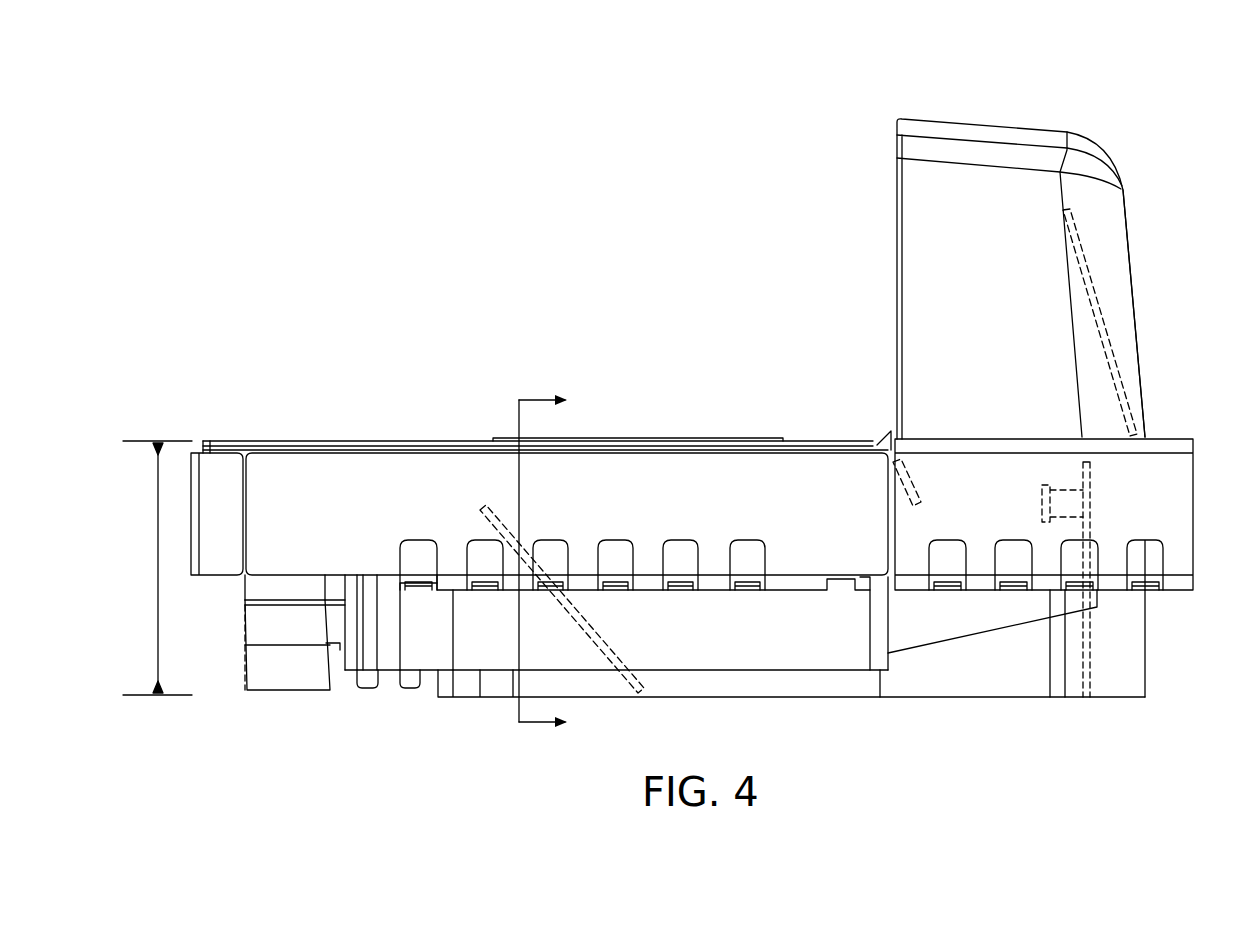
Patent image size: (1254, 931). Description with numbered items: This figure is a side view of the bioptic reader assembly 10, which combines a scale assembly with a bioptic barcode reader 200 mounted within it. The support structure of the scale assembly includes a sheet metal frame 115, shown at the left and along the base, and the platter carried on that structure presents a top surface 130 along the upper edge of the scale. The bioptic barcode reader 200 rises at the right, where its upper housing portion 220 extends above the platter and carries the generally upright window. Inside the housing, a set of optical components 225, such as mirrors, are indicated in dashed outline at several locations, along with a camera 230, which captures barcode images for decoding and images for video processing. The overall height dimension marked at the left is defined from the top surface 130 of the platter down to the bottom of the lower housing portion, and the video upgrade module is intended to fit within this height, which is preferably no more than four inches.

The bioptic reader assembly 10 is at (758, 118).
The sheet metal frame 115 is at (222, 480).
The top surface 130 is at (343, 432).
The bioptic barcode reader 200 is at (972, 100).
The upper housing portion 220 is at (1134, 278).
The optical components 225 is at (1100, 311).
The camera 230 is at (1040, 511).